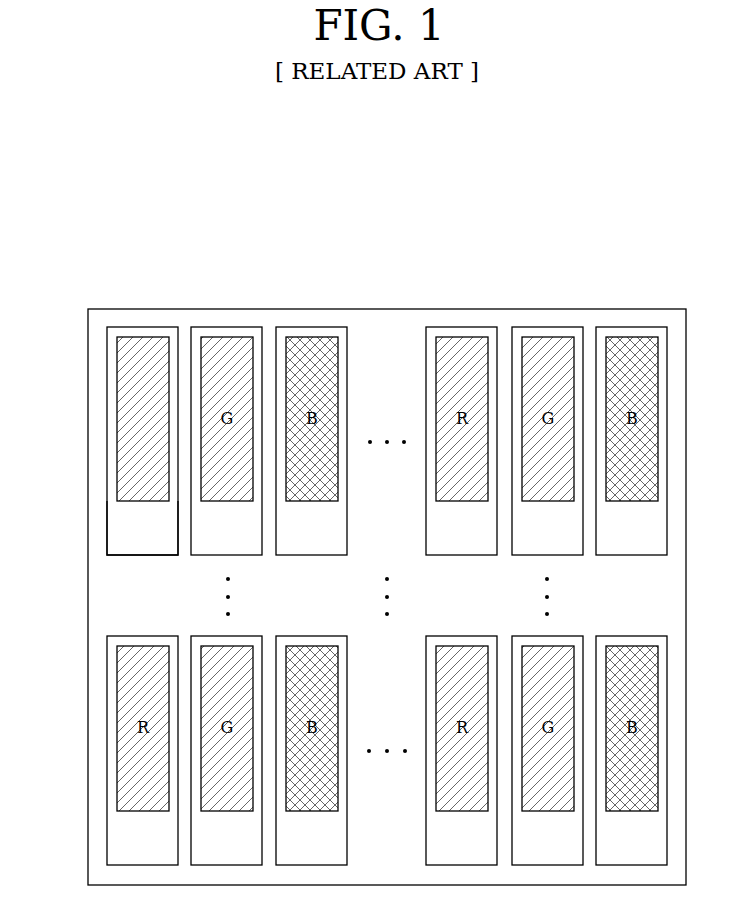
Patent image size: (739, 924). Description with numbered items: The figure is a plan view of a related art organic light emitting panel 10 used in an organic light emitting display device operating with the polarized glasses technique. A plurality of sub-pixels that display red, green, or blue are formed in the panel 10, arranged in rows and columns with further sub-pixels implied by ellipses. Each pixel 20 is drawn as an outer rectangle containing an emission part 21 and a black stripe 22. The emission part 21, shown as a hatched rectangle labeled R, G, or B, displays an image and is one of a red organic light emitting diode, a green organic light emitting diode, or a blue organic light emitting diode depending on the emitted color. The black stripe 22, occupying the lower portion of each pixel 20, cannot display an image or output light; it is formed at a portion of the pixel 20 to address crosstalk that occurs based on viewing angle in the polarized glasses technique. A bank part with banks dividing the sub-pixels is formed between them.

The organic light emitting panel 10 is at (643, 309).
The pixel 20 is at (160, 327).
The emission part 21 is at (117, 414).
The black stripe 22 is at (130, 524).